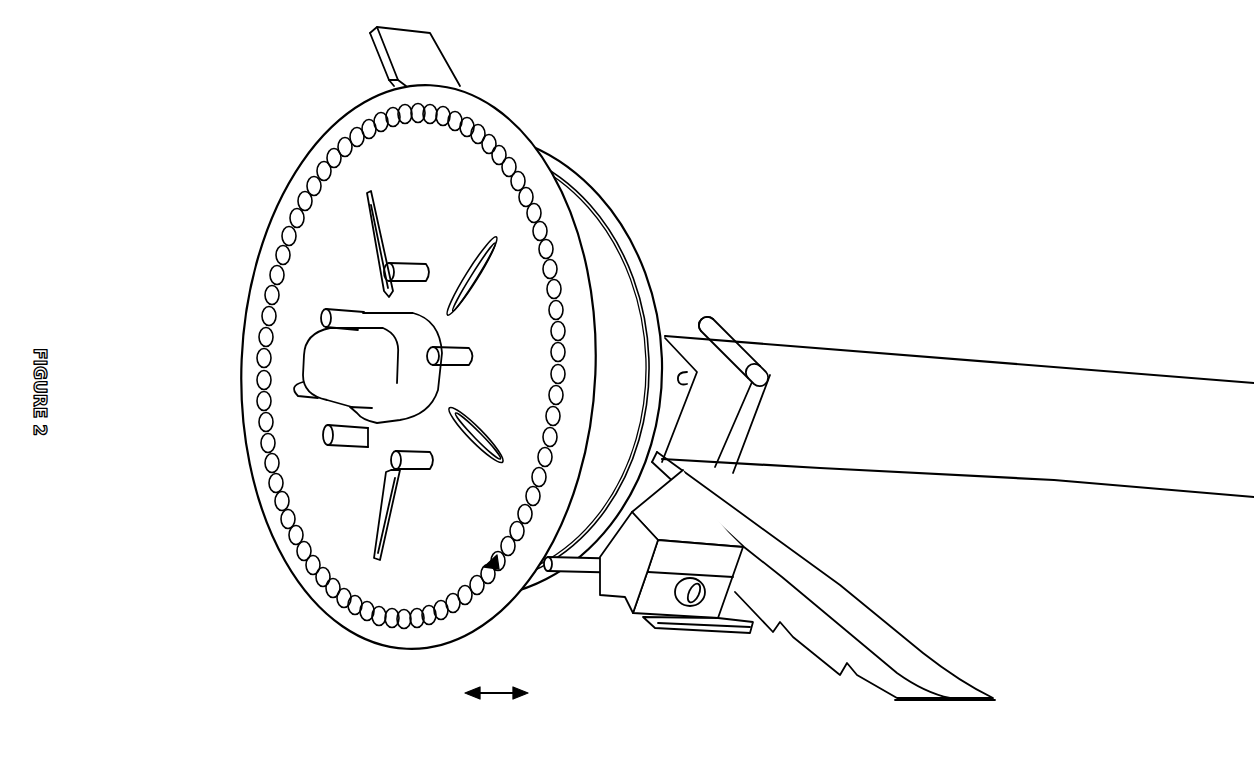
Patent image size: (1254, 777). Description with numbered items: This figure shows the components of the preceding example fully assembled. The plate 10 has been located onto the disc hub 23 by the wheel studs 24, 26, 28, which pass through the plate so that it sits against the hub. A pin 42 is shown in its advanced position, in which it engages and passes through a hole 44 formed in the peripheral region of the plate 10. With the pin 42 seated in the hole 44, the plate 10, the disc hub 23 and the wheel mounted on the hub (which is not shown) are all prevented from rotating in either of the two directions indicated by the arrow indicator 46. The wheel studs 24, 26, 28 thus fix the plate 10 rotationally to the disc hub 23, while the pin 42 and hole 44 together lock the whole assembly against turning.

The plate 10 is at (499, 122).
The disc hub 23 is at (613, 290).
The wheel stud 24 is at (412, 462).
The wheel stud 26 is at (413, 266).
The wheel stud 28 is at (465, 345).
The pin 42 is at (483, 567).
The hole 44 is at (493, 567).
The arrow indicator 46 is at (496, 718).